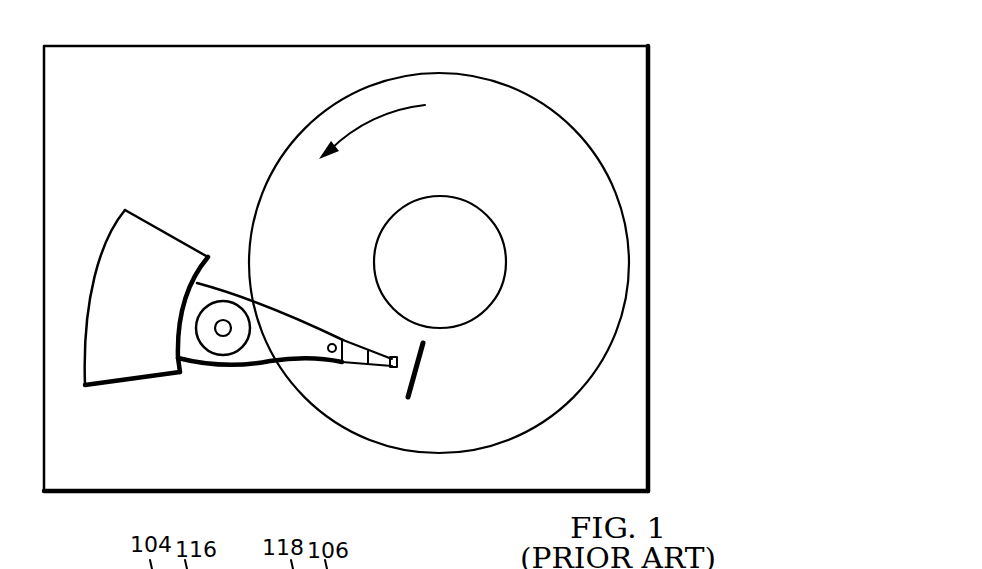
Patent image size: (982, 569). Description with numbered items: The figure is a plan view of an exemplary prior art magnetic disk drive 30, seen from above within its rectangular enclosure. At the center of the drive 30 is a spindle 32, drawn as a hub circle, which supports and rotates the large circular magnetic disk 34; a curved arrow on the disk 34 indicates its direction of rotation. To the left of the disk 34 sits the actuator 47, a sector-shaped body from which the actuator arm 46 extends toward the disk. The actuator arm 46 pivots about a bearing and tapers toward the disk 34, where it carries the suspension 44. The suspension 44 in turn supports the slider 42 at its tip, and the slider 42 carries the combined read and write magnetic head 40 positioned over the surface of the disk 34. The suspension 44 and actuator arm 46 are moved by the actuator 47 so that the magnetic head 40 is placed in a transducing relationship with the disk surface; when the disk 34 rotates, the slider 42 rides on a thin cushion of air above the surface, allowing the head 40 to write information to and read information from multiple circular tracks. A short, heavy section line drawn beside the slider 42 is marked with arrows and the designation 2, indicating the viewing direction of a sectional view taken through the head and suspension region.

The section line for FIG. 2 is at (440, 353).
The magnetic disk drive 30 is at (666, 52).
The spindle 32 is at (462, 197).
The magnetic disk 34 is at (562, 266).
The magnetic head 40 is at (395, 369).
The slider 42 is at (393, 357).
The suspension 44 is at (352, 367).
The actuator arm 46 is at (268, 303).
The actuator 47 is at (162, 225).